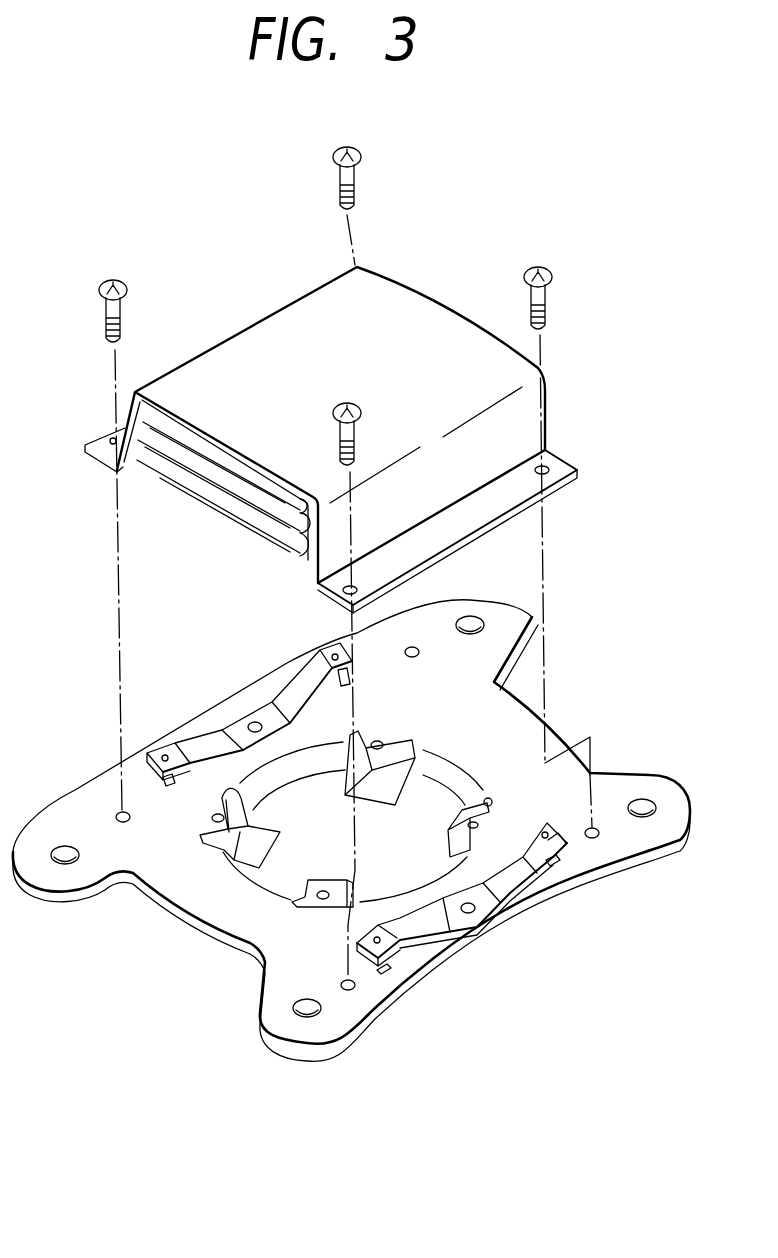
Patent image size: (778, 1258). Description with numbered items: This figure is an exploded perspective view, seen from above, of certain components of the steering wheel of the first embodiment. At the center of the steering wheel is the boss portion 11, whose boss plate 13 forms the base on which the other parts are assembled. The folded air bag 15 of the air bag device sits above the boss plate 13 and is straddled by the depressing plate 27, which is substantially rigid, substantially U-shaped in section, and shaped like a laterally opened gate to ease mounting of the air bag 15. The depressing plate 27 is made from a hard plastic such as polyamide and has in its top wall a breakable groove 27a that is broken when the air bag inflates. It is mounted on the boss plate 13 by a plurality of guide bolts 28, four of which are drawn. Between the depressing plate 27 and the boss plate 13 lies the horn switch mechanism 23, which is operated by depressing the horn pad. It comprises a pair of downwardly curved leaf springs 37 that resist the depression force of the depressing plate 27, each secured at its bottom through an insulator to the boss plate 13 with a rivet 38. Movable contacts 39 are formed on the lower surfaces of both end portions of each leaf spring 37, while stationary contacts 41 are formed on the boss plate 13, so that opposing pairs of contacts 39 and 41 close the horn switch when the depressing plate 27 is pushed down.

The boss portion 11 is at (463, 773).
The boss plate 13 is at (352, 1042).
The folded air bag 15 is at (190, 467).
The horn switch mechanism 23 is at (690, 905).
The depressing plate 27 is at (360, 419).
The breakable groove 27a is at (488, 530).
The guide bolts 28 is at (353, 181).
The leaf springs 37 is at (262, 680).
The rivet 38 is at (480, 933).
The contacts 39 is at (558, 845).
The contacts 41 is at (160, 781).